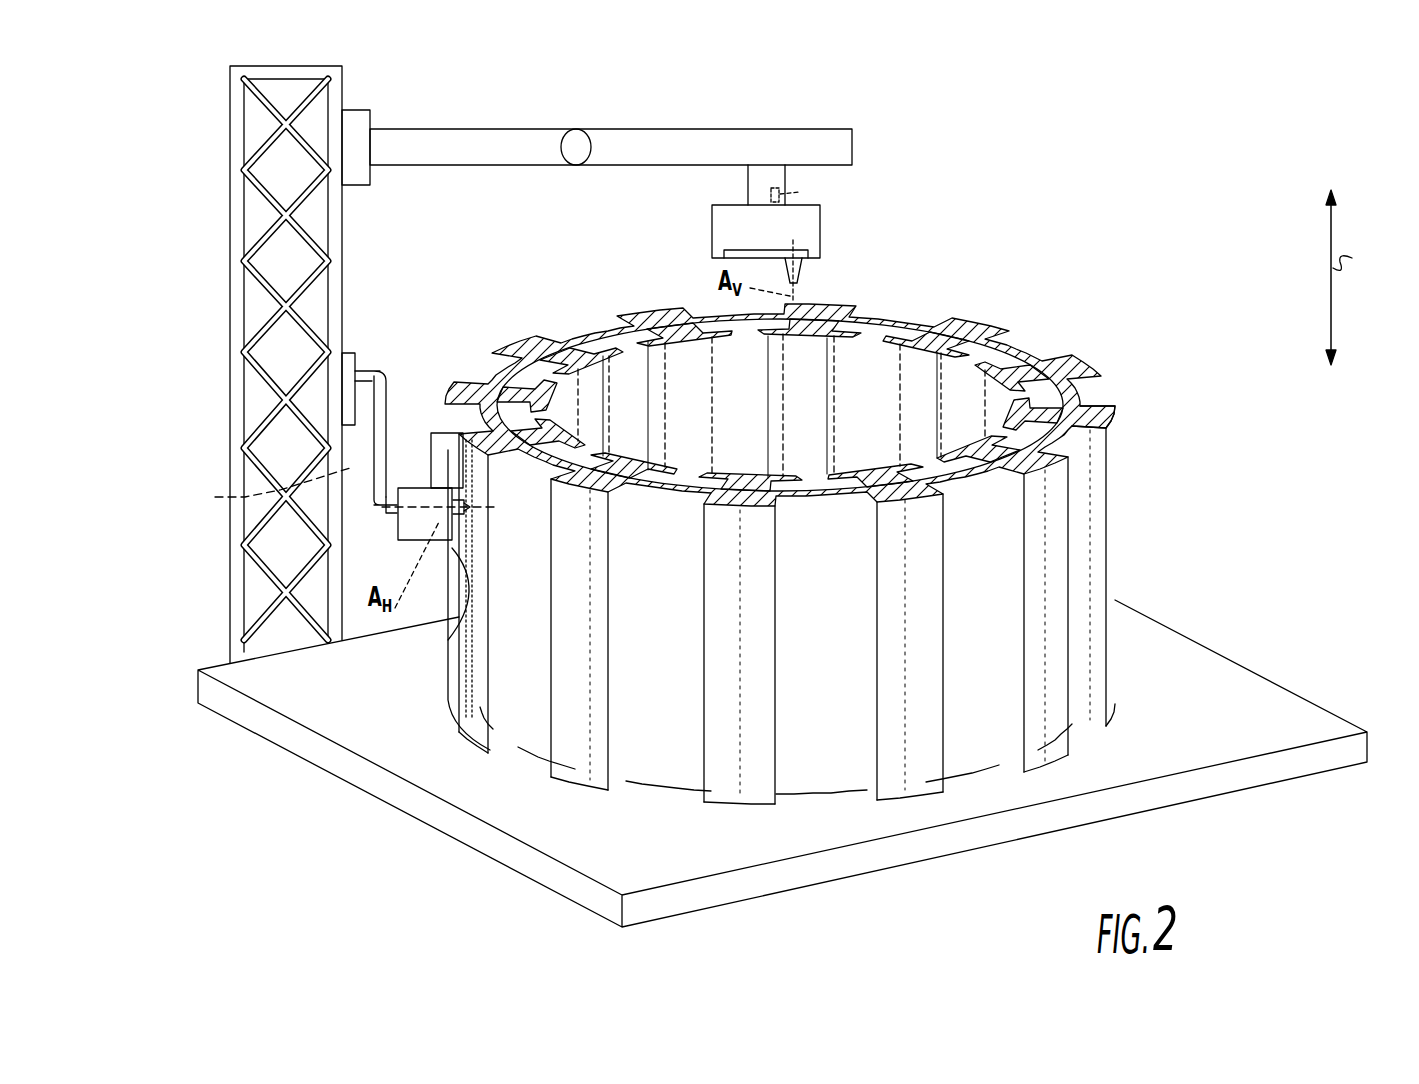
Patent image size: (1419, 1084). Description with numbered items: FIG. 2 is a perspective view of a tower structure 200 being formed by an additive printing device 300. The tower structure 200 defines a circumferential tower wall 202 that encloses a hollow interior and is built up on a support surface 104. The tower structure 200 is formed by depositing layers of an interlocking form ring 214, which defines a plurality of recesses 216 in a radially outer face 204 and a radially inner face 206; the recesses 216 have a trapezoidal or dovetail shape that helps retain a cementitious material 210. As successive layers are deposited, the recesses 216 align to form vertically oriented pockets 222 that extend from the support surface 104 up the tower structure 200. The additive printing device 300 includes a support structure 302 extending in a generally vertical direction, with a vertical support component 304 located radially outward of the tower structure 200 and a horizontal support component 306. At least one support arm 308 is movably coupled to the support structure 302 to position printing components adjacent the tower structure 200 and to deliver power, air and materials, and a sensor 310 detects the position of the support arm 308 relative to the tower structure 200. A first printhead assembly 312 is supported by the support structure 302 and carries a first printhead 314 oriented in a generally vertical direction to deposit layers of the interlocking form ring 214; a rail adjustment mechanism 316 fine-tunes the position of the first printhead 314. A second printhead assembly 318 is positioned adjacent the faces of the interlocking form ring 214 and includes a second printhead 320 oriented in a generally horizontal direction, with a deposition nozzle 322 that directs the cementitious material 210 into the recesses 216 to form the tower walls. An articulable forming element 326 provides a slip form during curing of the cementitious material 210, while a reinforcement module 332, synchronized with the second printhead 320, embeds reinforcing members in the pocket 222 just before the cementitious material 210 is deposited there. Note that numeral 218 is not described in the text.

The support surface 104 is at (1290, 712).
The tower structure 200 is at (832, 387).
The tower wall 202 is at (816, 590).
The radially outer face 204 is at (583, 765).
The radially inner face 206 is at (1005, 408).
The cementitious material 210 is at (452, 708).
The interlocking form ring 214 is at (1066, 365).
The recesses 216 is at (692, 370).
The tooth head 218 is at (1108, 402).
The pockets 222 is at (800, 385).
The additive printing device 300 is at (1150, 117).
The support structure 302 is at (226, 240).
The vertical support component 304 is at (233, 452).
The horizontal support component 306 is at (712, 152).
The support arm 308 is at (455, 118).
The sensor 310 is at (514, 340).
The first printhead assembly 312 is at (822, 228).
The first printhead 314 is at (546, 385).
The rail adjustment mechanism 316 is at (728, 252).
The second printhead assembly 318 is at (402, 462).
The second printhead 320 is at (400, 522).
The deposition nozzle 322 is at (806, 268).
The articulable forming element 326 is at (462, 572).
The reinforcement module 332 is at (456, 444).